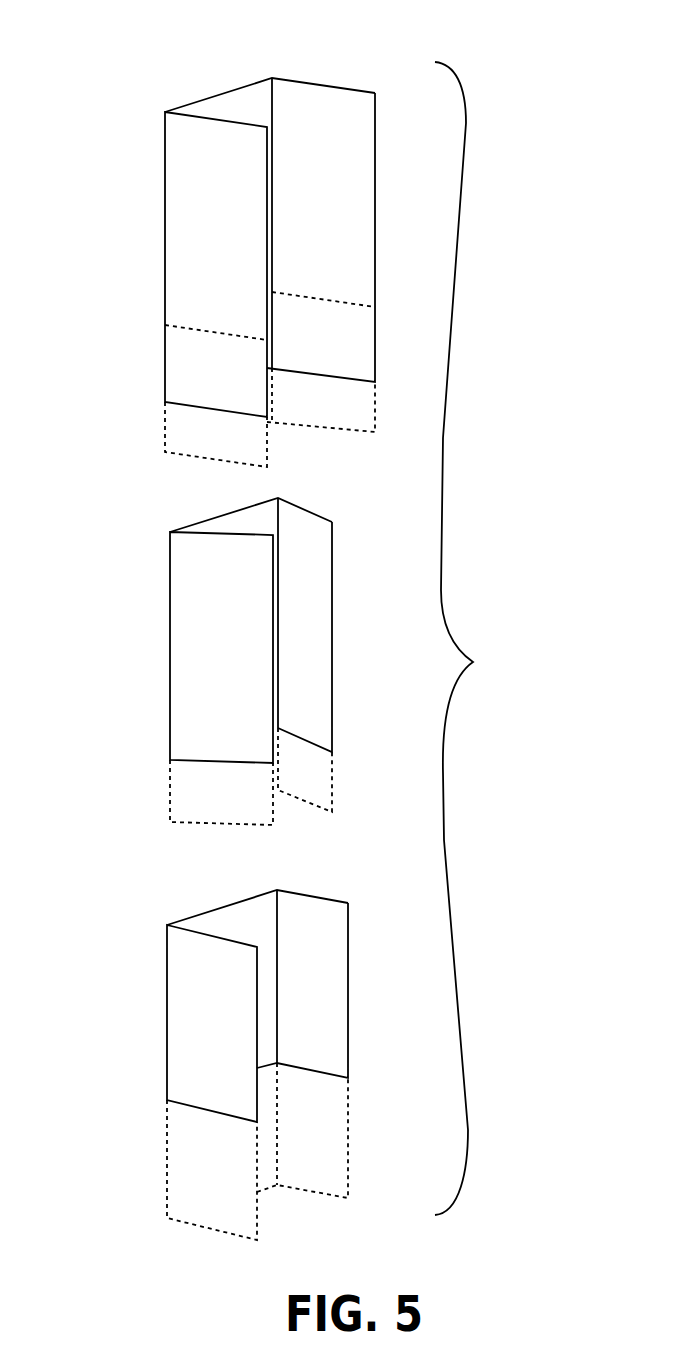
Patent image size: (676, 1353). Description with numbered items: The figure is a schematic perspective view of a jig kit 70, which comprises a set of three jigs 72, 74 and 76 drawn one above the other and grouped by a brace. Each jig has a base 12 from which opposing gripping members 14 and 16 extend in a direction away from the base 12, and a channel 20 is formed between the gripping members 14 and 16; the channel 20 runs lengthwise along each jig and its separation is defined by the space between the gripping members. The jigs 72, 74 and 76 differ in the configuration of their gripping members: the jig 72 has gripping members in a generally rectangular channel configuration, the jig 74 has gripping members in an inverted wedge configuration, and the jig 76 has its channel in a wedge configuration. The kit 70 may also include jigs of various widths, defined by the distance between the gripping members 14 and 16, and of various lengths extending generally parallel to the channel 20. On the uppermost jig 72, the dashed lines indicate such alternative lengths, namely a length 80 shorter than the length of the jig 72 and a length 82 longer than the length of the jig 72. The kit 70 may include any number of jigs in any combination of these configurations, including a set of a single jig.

The base 12 is at (240, 102).
The gripping member 14 is at (352, 188).
The gripping member 16 is at (164, 676).
The channel 20 is at (288, 105).
The jig kit 70 is at (497, 638).
The jig 72 is at (161, 289).
The jig 74 is at (203, 583).
The jig 76 is at (192, 1018).
The length 80 is at (195, 330).
The length 82 is at (193, 455).